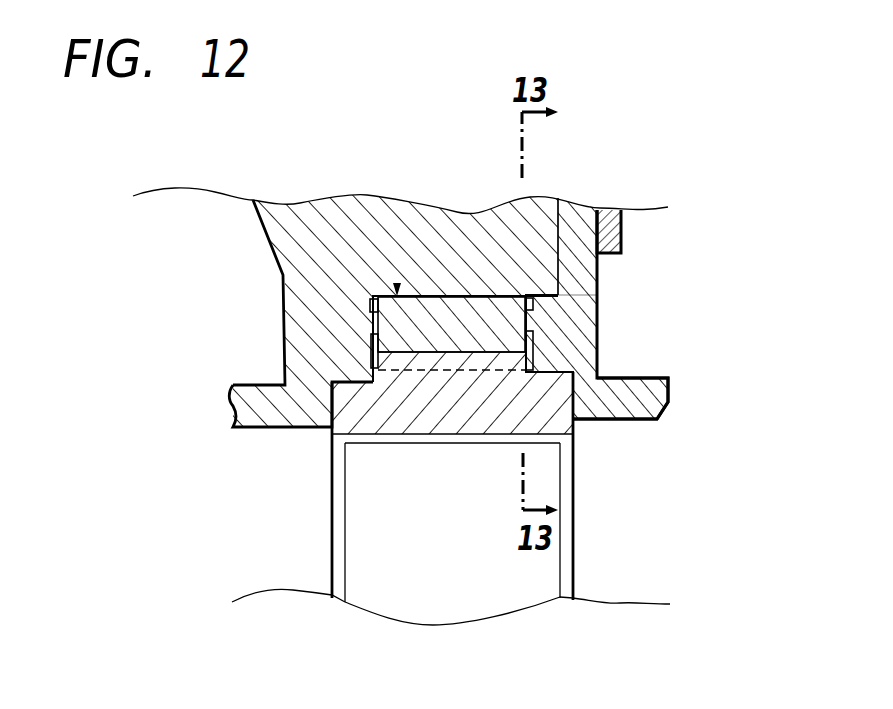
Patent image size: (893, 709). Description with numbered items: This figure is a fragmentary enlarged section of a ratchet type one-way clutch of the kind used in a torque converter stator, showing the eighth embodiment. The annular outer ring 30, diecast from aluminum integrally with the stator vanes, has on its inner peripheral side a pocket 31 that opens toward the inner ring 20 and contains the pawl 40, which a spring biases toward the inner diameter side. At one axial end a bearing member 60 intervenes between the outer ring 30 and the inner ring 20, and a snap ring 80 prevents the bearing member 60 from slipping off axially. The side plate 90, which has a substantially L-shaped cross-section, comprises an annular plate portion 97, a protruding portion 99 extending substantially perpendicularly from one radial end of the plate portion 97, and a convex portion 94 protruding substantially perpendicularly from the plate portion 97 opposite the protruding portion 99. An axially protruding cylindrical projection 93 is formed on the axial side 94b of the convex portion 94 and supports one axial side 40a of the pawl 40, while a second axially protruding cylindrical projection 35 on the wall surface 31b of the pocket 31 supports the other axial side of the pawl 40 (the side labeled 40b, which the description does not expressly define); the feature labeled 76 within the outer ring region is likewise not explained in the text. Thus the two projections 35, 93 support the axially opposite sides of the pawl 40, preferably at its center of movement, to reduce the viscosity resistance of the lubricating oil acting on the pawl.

The inner ring 20 is at (570, 445).
The outer ring 30 is at (543, 200).
The pocket 31 is at (397, 284).
The wall surface 31b is at (370, 305).
The cylindrical projection 35 is at (383, 296).
The pawl 40 is at (455, 313).
The one axial side of the pawl 40a is at (375, 343).
The second lip of insert 40b is at (533, 335).
The bearing member 60 is at (560, 420).
The bore portion 76 is at (500, 220).
The snap ring 80 is at (623, 223).
The side plate 90 is at (588, 352).
The cylindrical projection 93 is at (530, 303).
The convex portion 94 is at (550, 342).
The axial side of the convex portion 94b is at (520, 360).
The annular plate portion 97 is at (578, 267).
The protruding portion 99 is at (648, 400).